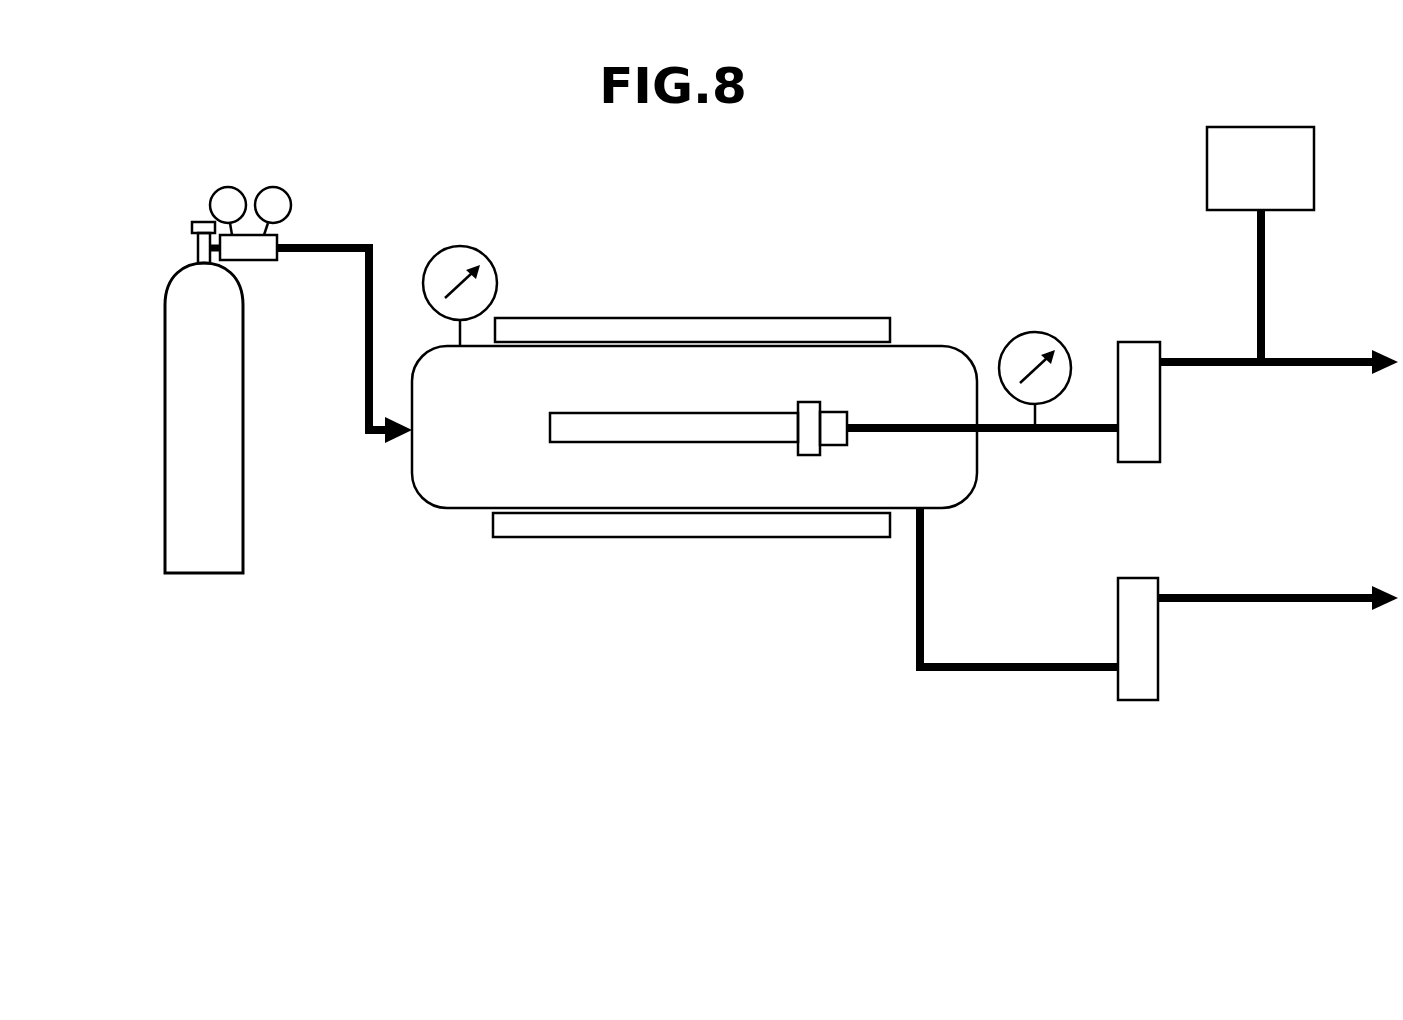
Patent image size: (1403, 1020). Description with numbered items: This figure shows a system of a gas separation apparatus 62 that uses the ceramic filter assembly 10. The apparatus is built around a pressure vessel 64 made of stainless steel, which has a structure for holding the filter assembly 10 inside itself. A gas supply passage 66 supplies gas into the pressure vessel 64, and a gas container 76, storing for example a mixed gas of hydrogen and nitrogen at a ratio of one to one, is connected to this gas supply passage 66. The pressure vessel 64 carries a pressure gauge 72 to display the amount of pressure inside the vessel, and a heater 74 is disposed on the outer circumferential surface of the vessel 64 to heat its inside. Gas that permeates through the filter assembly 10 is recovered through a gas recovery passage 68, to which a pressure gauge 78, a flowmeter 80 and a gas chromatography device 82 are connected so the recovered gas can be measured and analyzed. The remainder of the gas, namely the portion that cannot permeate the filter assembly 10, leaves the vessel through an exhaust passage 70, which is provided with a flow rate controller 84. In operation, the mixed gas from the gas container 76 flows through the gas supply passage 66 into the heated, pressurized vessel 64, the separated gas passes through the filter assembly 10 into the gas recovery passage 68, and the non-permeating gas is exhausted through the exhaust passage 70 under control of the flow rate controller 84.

The filter assembly 10 is at (670, 455).
The gas separation apparatus 62 is at (400, 146).
The pressure vessel 64 is at (461, 510).
The gas supply passage 66 is at (365, 336).
The gas recovery passage 68 is at (1064, 435).
The exhaust passage 70 is at (1036, 672).
The pressure gauge 72 is at (460, 260).
The heater 74 is at (718, 330).
The gas container 76 is at (225, 441).
The pressure gauge 78 is at (1048, 333).
The flowmeter 80 is at (1148, 409).
The gas chromatography device 82 is at (1217, 170).
The flow rate controller 84 is at (1145, 641).